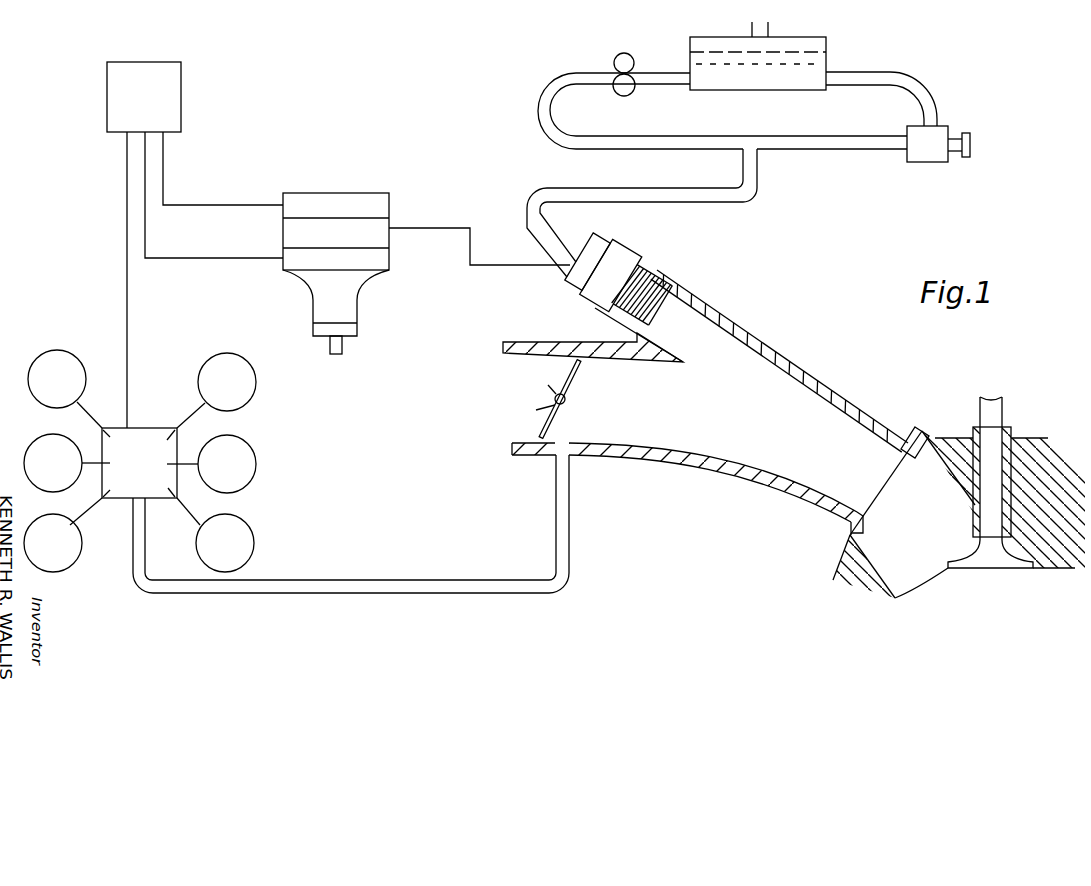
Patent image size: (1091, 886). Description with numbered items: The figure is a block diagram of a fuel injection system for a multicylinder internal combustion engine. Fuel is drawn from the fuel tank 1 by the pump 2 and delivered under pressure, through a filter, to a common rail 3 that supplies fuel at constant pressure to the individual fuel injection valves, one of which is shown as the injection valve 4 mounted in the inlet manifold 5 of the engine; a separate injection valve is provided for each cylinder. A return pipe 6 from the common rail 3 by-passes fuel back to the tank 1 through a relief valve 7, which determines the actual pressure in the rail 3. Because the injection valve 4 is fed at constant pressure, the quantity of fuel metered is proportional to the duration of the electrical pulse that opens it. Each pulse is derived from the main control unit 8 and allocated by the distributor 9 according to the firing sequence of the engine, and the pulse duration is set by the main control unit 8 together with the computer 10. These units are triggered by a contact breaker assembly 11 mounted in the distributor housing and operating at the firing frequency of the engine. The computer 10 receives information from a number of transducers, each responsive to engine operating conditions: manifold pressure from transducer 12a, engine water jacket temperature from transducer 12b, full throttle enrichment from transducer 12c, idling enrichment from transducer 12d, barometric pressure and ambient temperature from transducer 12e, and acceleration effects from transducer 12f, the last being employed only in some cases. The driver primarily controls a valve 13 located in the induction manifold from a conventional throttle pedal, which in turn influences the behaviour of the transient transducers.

The fuel tank 1 is at (805, 40).
The pump 2 is at (635, 57).
The common rail 3 is at (704, 142).
The fuel injection valve 4 is at (612, 246).
The inlet manifold 5 is at (722, 330).
The return pipe 6 is at (918, 82).
The relief valve 7 is at (925, 162).
The main control unit 8 is at (182, 97).
The distributor 9 is at (381, 227).
The computer 10 is at (147, 425).
The contact breaker assembly 11 is at (378, 190).
The transducer 12a is at (72, 348).
The transducer 12b is at (55, 430).
The transducer 12c is at (60, 513).
The transducer 12d is at (253, 525).
The transducer 12e is at (255, 453).
The transducer 12f is at (255, 382).
The valve 13 is at (558, 410).